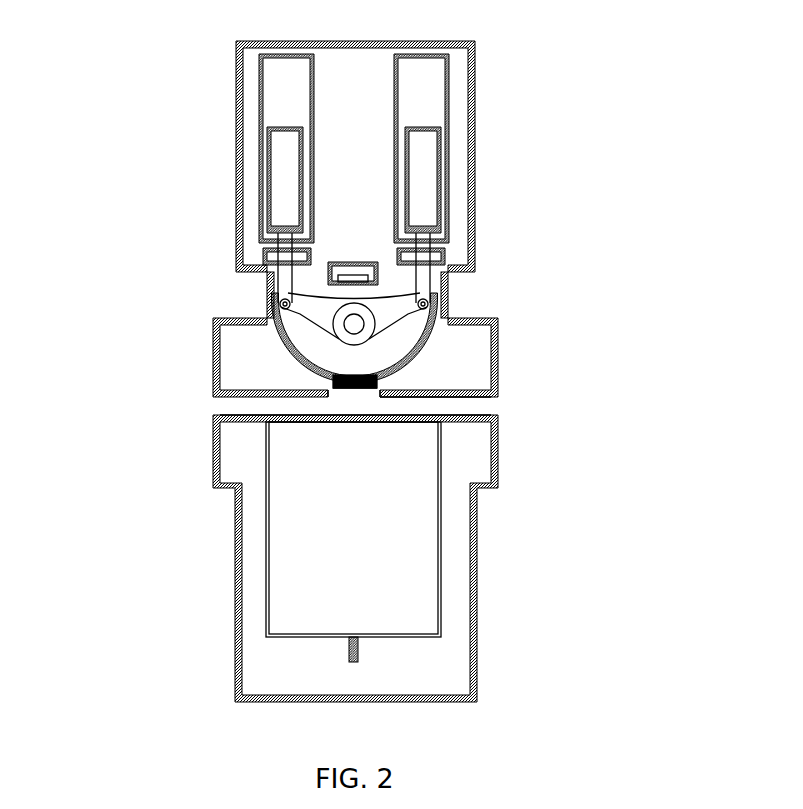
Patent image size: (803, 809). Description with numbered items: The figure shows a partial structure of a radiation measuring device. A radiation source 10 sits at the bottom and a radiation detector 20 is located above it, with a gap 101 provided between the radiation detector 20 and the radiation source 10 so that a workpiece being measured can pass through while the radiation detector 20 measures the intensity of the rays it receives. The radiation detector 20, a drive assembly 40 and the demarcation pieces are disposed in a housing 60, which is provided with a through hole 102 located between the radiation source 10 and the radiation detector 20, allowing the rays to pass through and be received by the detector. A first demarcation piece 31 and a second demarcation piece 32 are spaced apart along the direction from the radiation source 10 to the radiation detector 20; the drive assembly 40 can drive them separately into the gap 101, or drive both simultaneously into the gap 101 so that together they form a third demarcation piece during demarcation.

The radiation source 10 is at (448, 578).
The radiation detector 20 is at (353, 263).
The first demarcation piece 31 is at (345, 377).
The second demarcation piece 32 is at (362, 388).
The drive assembly 40 is at (423, 177).
The housing 60 is at (237, 73).
The gap 101 is at (490, 403).
The through hole 102 is at (347, 393).